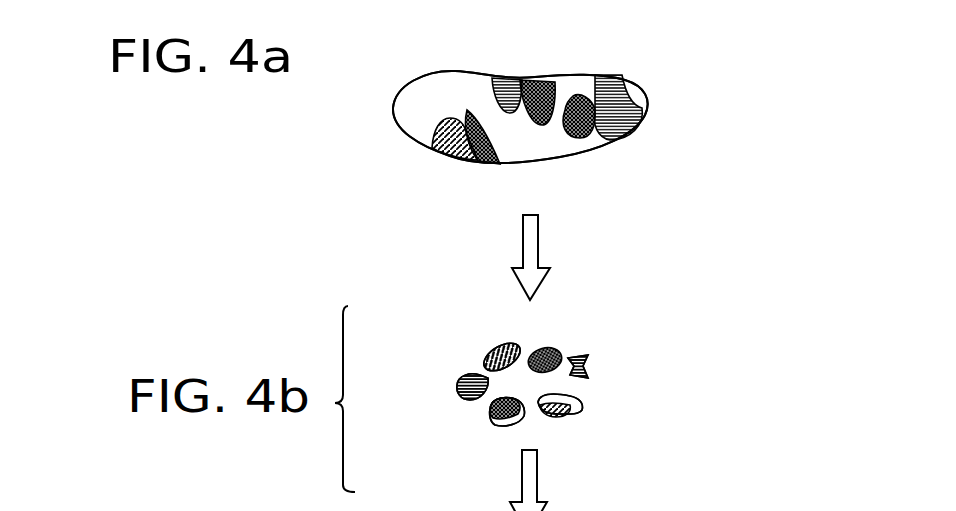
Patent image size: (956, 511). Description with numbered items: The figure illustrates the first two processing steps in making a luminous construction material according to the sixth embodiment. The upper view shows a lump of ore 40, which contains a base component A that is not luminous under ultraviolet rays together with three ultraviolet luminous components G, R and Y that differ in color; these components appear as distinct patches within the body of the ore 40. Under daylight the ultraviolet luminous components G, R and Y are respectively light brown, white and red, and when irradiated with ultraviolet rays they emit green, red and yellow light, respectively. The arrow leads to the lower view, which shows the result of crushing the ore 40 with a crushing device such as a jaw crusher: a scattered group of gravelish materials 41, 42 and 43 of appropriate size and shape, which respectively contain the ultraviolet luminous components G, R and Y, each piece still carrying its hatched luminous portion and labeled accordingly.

In FIG. 4a, the ore 40 is at (388, 117).
In FIG. 4a, the base component A is at (423, 92).
In FIG. 4a, the ultraviolet luminous component R is at (467, 110).
In FIG. 4b, the ultraviolet luminous component R is at (577, 352).
In FIG. 4a, the ultraviolet luminous component G is at (448, 143).
In FIG. 4b, the ultraviolet luminous component G is at (583, 447).
In FIG. 4a, the ultraviolet luminous component Y is at (610, 80).
In FIG. 4b, the ultraviolet luminous component Y is at (588, 368).
In FIG. 4b, the gravelish material 41 is at (598, 355).
In FIG. 4b, the gravelish material 42 is at (475, 418).
In FIG. 4b, the gravelish material 43 is at (530, 339).